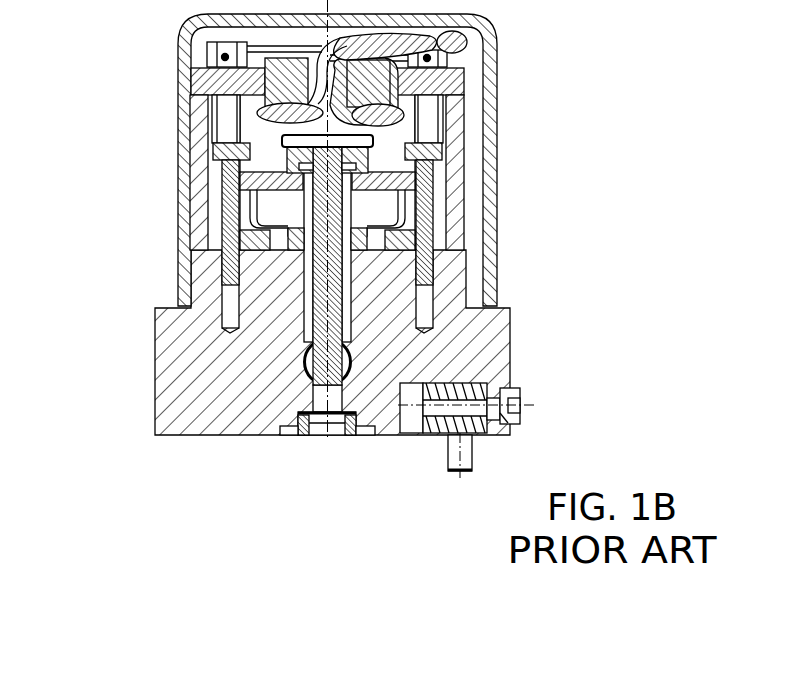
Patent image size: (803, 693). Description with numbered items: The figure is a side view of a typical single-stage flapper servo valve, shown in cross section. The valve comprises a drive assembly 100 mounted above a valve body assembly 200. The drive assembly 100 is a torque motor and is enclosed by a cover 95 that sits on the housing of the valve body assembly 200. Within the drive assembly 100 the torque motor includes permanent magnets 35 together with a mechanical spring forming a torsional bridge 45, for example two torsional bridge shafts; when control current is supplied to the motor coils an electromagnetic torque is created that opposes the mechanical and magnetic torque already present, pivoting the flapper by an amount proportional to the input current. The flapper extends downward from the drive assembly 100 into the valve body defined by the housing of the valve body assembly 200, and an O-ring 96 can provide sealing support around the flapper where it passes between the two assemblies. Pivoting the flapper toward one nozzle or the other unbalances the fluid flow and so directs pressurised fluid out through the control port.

The drive assembly 100 is at (157, 64).
The cover 95 is at (496, 100).
The O-ring 96 is at (410, 167).
The torsional bridge 45 is at (262, 183).
The permanent magnets 35 is at (204, 152).
The valve body assembly 200 is at (512, 336).